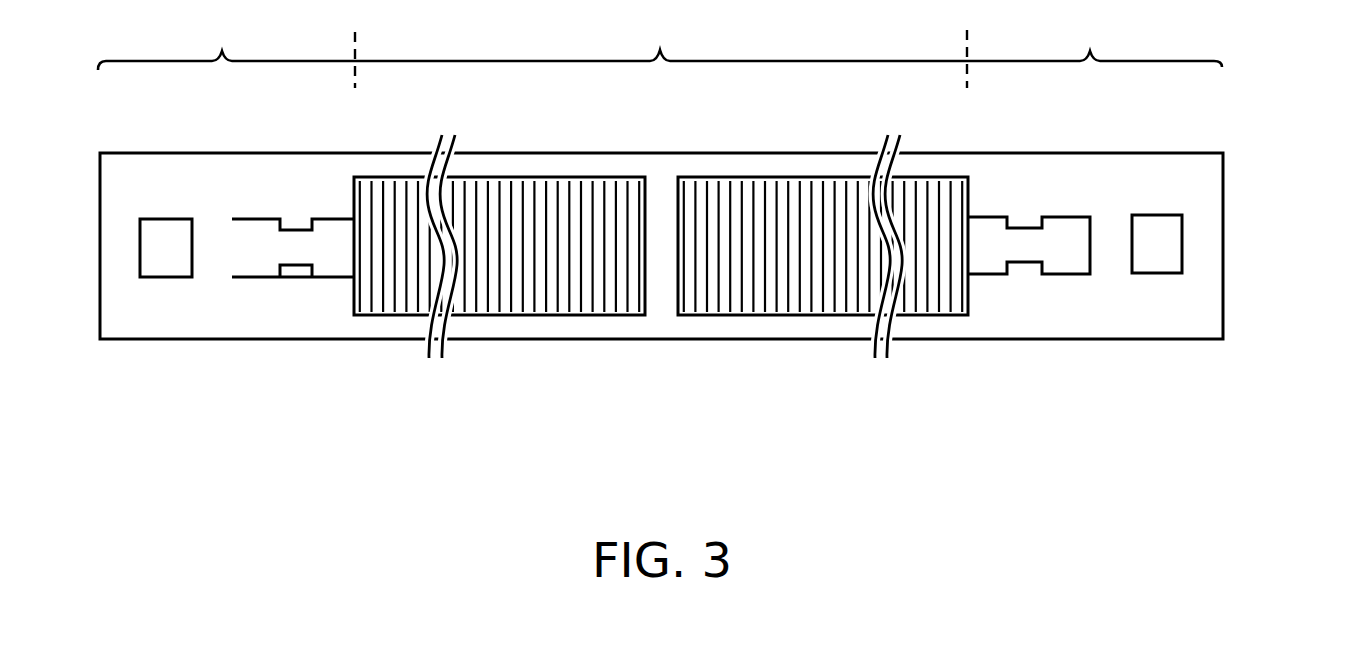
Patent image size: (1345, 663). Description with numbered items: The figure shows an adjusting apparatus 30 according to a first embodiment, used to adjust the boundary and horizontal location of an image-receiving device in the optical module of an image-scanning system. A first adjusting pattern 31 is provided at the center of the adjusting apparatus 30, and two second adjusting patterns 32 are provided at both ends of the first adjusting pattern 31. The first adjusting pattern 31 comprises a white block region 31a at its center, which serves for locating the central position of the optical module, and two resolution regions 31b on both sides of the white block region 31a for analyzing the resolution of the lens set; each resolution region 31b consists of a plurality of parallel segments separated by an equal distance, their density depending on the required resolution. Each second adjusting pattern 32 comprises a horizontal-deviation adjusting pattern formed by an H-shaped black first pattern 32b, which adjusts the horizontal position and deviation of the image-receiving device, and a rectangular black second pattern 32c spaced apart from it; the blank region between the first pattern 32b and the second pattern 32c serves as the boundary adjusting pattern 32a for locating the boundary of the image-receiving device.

The adjusting apparatus 30 is at (1228, 168).
The first adjusting pattern 31 is at (661, 49).
The white block region 31a is at (662, 281).
The resolution regions 31b is at (582, 263).
The second adjusting patterns 32 is at (660, 40).
The boundary adjusting pattern 32a is at (214, 284).
The first pattern 32b is at (295, 265).
The second pattern 32c is at (167, 277).